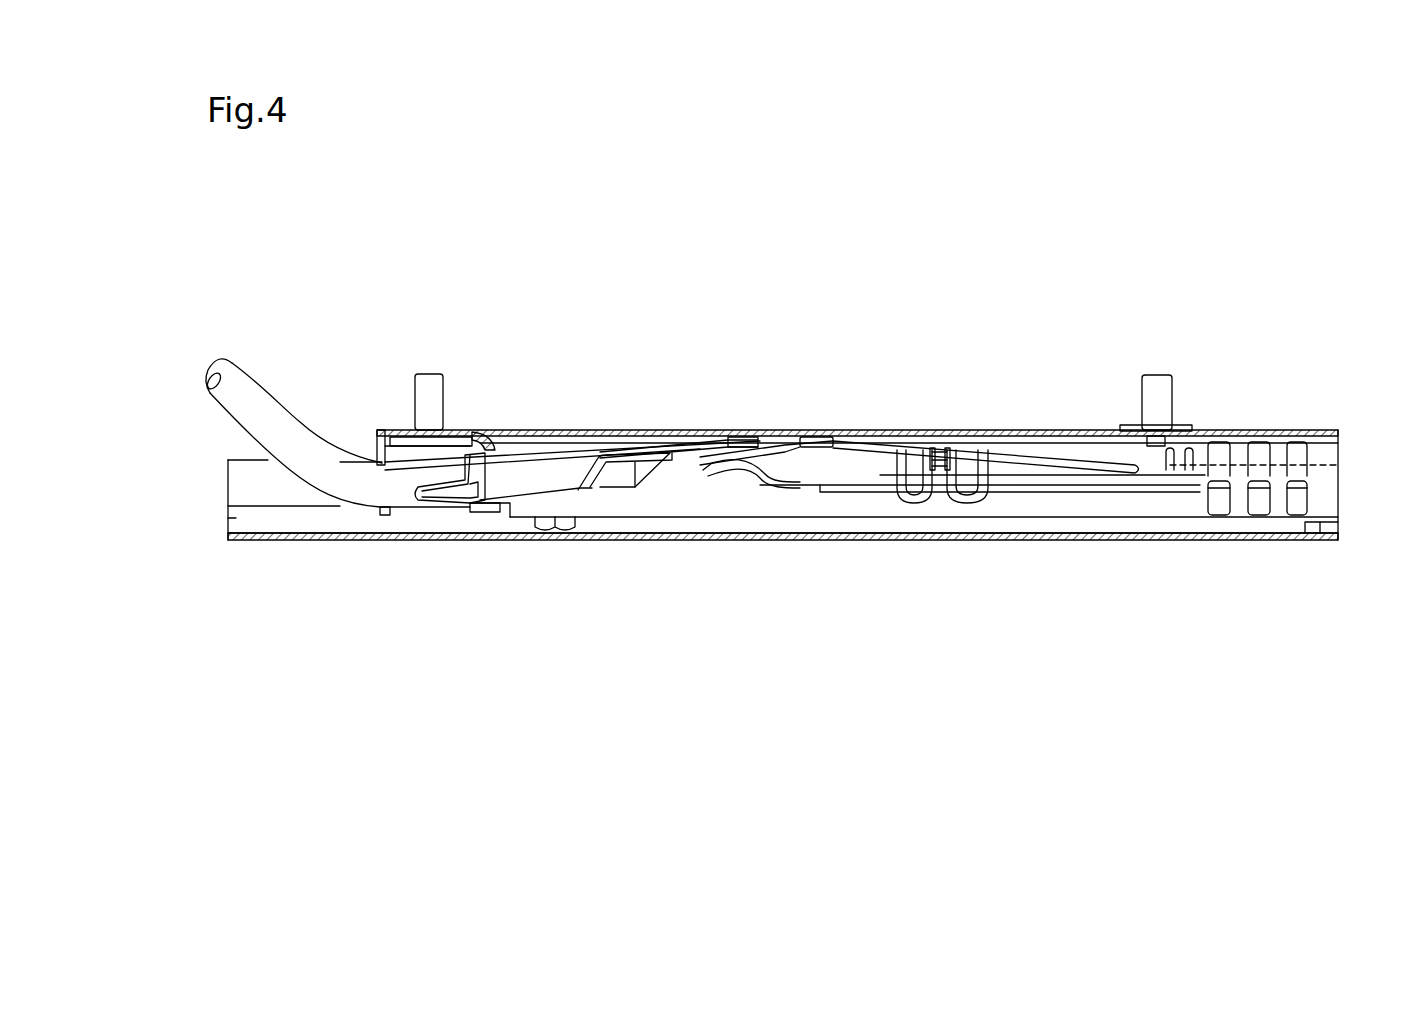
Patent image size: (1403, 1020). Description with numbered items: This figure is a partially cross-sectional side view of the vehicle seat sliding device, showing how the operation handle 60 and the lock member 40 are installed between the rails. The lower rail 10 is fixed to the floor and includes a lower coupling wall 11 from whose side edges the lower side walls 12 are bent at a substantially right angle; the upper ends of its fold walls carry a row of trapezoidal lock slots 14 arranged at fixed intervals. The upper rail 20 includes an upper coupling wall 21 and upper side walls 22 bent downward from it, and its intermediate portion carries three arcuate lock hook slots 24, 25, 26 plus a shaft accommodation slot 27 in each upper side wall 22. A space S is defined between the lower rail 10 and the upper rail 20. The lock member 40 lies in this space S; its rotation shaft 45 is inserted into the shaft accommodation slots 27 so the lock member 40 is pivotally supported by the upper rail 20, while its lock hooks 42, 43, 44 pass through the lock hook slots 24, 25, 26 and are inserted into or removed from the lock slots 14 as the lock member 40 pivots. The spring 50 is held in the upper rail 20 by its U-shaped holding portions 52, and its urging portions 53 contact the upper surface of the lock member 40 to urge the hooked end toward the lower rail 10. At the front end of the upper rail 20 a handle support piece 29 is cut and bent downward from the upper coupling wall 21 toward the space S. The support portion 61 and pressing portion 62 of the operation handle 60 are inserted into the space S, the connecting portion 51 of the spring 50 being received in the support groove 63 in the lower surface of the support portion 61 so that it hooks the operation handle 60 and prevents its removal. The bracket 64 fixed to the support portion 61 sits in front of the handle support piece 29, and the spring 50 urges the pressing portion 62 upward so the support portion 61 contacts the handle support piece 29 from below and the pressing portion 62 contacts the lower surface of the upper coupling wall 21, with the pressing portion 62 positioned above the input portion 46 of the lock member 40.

The lower rail 10 is at (415, 540).
The lower coupling wall 11 is at (358, 540).
The lower side wall 12 is at (232, 518).
The lock slot 14 is at (1305, 470).
The upper rail 20 is at (628, 430).
The upper coupling wall 21 is at (549, 430).
The upper side wall 22 is at (1012, 445).
The lock hook slot 24 is at (1222, 450).
The lock hook slot 25 is at (1262, 450).
The lock hook slot 26 is at (1300, 445).
The shaft accommodation slot 27 is at (943, 450).
The handle support piece 29 is at (493, 435).
The lock member 40 is at (792, 490).
The lock hook 42 is at (1208, 500).
The lock hook 43 is at (1240, 490).
The lock hook 44 is at (1278, 490).
The rotation shaft 45 is at (962, 485).
The input portion 46 is at (738, 478).
The spring 50 is at (808, 445).
The connecting portion 51 is at (592, 490).
The holding portion 52 is at (845, 440).
The urging portion 53 is at (1133, 467).
The operation handle 60 is at (268, 392).
The support portion 61 is at (518, 492).
The pressing portion 62 is at (735, 440).
The support groove 63 is at (598, 490).
The bracket 64 is at (420, 489).
The space S is at (682, 507).